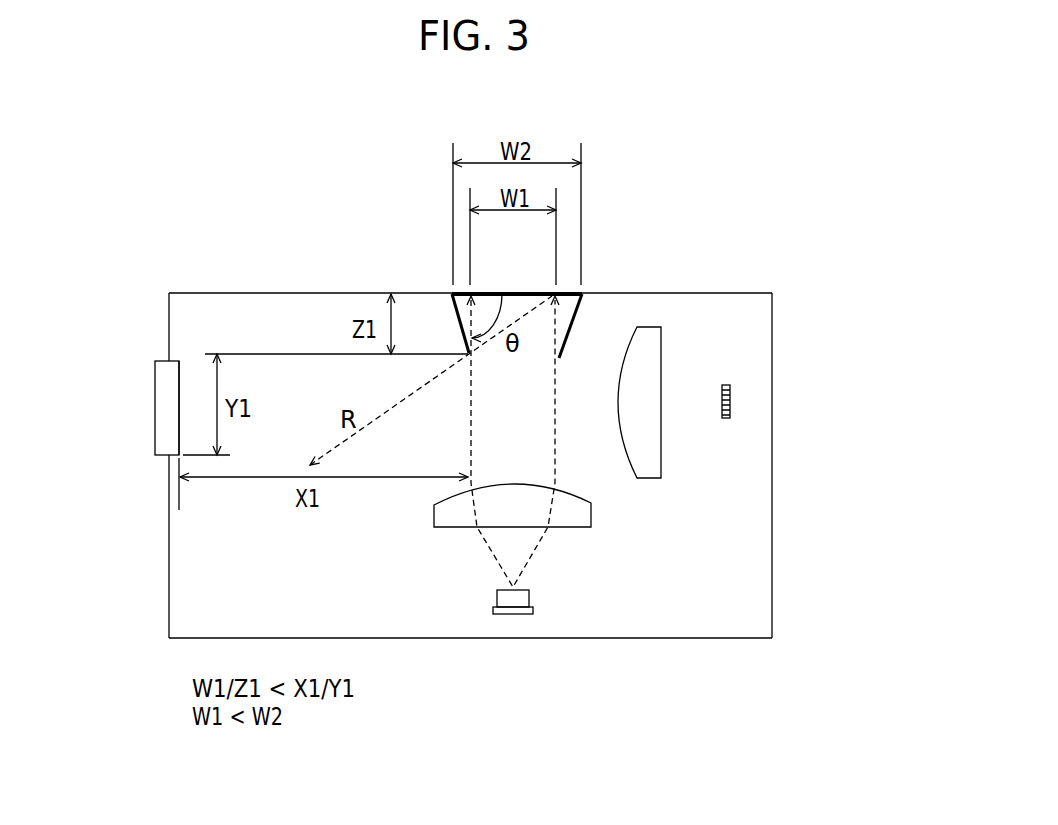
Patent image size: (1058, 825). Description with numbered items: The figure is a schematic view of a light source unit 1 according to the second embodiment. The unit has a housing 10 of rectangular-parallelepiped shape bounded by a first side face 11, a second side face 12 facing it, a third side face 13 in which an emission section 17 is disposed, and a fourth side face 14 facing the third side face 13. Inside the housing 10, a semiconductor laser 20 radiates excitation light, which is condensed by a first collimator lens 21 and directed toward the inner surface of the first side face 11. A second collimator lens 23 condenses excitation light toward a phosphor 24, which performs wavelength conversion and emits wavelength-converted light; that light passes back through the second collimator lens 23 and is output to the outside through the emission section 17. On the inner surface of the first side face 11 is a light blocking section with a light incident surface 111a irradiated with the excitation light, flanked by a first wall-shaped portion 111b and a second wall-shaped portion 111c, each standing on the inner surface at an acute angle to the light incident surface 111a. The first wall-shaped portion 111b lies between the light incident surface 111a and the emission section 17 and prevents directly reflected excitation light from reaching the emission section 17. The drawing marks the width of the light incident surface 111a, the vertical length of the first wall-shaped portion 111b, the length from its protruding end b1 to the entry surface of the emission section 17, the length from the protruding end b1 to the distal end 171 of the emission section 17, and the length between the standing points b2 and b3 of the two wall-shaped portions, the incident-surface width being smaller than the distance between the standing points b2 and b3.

The light source unit 1 is at (367, 218).
The housing 10 is at (472, 468).
The first side face 11 is at (212, 293).
The second side face 12 is at (628, 638).
The third side face 13 is at (170, 560).
The fourth side face 14 is at (772, 513).
The emission section 17 is at (155, 378).
The distal end 171 is at (176, 456).
The semiconductor laser 20 is at (529, 603).
The first collimator lens 21 is at (438, 527).
The second collimator lens 23 is at (647, 327).
The phosphor 24 is at (730, 397).
The light incident surface 111a is at (533, 294).
The first wall-shaped portion 111b is at (463, 322).
The second wall-shaped portion 111c is at (566, 328).
The protruding end b1 is at (469, 352).
The standing point b2 is at (452, 293).
The standing point b3 is at (581, 293).